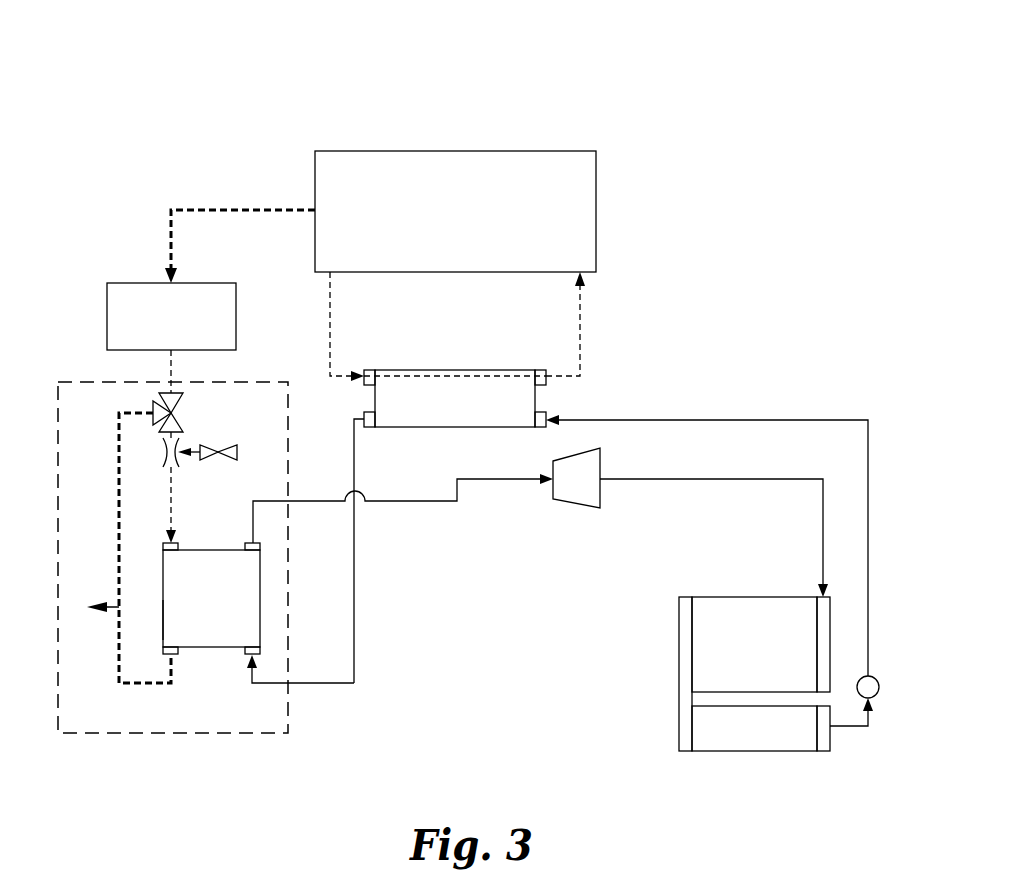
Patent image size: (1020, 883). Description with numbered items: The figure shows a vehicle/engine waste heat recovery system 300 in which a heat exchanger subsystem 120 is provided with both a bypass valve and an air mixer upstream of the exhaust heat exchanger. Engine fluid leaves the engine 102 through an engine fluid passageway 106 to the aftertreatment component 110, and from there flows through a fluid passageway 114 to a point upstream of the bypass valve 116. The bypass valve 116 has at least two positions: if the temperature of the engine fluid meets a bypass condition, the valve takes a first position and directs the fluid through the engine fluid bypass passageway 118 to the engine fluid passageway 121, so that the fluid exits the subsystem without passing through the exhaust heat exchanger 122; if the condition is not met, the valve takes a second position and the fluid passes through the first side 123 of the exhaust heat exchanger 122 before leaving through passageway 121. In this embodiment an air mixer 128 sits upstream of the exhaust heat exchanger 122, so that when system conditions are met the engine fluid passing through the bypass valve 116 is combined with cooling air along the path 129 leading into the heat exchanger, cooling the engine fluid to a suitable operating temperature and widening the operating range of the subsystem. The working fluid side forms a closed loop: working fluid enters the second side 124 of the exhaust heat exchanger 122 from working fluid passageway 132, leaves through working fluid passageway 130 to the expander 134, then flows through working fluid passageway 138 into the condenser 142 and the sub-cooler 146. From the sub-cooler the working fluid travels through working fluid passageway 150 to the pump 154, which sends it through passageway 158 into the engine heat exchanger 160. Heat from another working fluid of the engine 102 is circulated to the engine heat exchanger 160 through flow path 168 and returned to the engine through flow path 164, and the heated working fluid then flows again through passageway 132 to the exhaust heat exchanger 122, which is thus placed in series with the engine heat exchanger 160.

The waste heat recovery system 300 is at (766, 114).
The engine 102 is at (441, 151).
The engine fluid passageway 106 is at (222, 210).
The aftertreatment component 110 is at (107, 305).
The fluid passageway 114 is at (173, 360).
The bypass valve 116 is at (183, 413).
The engine fluid bypass passageway 118 is at (119, 540).
The heat exchanger subsystem 120 is at (58, 437).
The engine fluid passageway 121 is at (110, 612).
The exhaust heat exchanger 122 is at (197, 647).
The first side 123 is at (163, 627).
The second side 124 is at (260, 588).
The air mixer 128 is at (237, 452).
The refrigerant line 129 is at (175, 512).
The working fluid passageway 130 is at (315, 501).
The working fluid passageway 132 is at (330, 683).
The expander 134 is at (600, 460).
The working fluid passageway 138 is at (712, 479).
The condenser 142 is at (730, 597).
The sub-cooler 146 is at (735, 751).
The working fluid passageway 150 is at (845, 726).
The pump 154 is at (880, 688).
The passageway 158 is at (880, 497).
The engine heat exchanger 160 is at (410, 427).
The flow path 164 is at (580, 330).
The flow path 168 is at (330, 301).